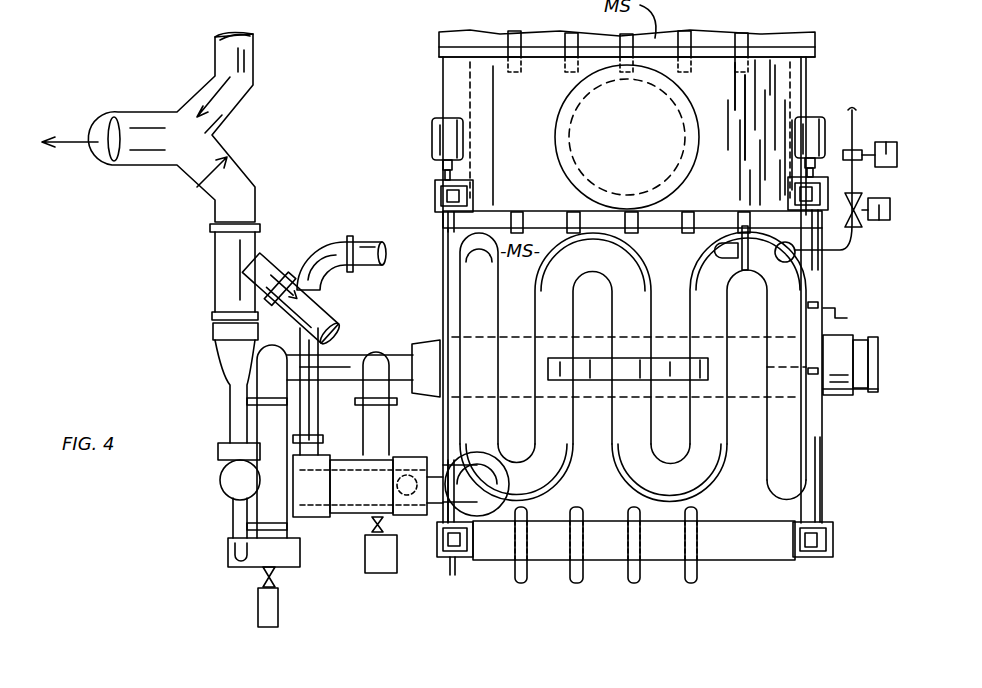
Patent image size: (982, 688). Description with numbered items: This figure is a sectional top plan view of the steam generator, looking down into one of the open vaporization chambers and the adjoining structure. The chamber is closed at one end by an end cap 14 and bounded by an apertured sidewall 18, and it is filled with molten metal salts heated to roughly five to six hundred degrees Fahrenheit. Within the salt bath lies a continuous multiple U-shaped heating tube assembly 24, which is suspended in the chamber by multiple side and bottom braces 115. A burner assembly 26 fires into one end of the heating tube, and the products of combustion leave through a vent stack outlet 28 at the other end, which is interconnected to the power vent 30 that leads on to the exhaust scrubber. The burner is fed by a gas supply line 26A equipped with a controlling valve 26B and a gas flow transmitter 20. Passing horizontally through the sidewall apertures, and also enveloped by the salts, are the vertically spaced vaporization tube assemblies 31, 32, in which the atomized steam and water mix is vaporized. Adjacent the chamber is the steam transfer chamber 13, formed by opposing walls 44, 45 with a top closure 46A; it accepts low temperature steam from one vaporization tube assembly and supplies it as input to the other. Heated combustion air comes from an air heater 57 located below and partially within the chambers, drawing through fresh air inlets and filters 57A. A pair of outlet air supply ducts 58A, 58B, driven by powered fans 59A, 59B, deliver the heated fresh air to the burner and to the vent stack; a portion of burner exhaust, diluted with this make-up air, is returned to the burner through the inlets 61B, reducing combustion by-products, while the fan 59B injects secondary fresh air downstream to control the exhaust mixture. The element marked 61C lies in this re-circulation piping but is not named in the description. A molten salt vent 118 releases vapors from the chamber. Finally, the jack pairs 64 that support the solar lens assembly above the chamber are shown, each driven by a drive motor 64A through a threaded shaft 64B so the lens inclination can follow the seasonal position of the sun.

The steam transfer chamber 13 is at (805, 62).
The end cap 14 is at (775, 548).
The apertured sidewall 18 is at (555, 40).
The gas flow transmitter 20 is at (871, 140).
The heating tube assembly 24 is at (710, 280).
The burner assembly 26 is at (782, 258).
The gas supply line 26A is at (833, 255).
The controlling valve 26B is at (880, 220).
The vent stack outlet 28 is at (505, 492).
The power vent 30 is at (243, 158).
The vaporization tube assembly 31 is at (568, 212).
The vaporization tube assembly 32 is at (553, 66).
The opposing wall 44 is at (465, 62).
The opposing wall 45 is at (800, 102).
The top closure 46A is at (768, 97).
The air heater 57 is at (840, 345).
The fresh air inlets and filters 57A is at (885, 380).
The outlet air supply duct 58A is at (265, 375).
The outlet air supply duct 58B is at (378, 372).
The powered fan 59A is at (270, 603).
The powered fan 59B is at (380, 560).
The inlet 61B is at (728, 250).
The manifold cylinder 61C is at (387, 495).
The jack pair 64 is at (435, 196).
The drive motor 64A is at (440, 138).
The threaded shaft 64B is at (442, 255).
The side and bottom braces 115 is at (470, 375).
The molten salt vent 118 is at (268, 280).